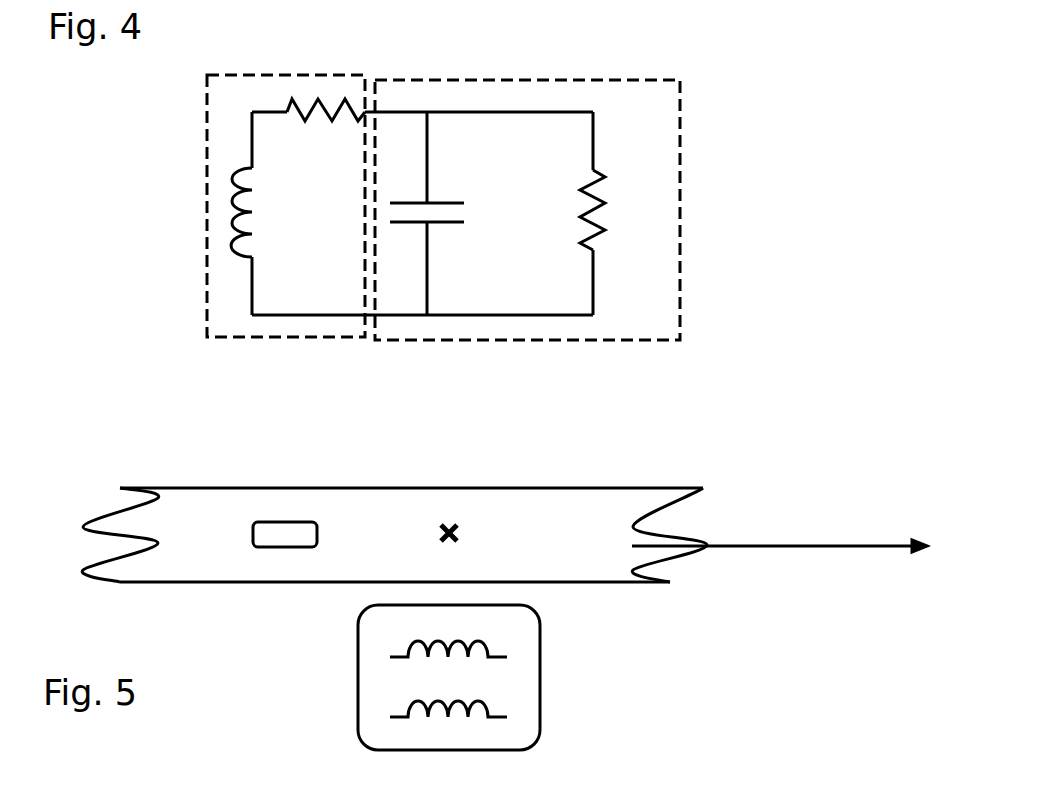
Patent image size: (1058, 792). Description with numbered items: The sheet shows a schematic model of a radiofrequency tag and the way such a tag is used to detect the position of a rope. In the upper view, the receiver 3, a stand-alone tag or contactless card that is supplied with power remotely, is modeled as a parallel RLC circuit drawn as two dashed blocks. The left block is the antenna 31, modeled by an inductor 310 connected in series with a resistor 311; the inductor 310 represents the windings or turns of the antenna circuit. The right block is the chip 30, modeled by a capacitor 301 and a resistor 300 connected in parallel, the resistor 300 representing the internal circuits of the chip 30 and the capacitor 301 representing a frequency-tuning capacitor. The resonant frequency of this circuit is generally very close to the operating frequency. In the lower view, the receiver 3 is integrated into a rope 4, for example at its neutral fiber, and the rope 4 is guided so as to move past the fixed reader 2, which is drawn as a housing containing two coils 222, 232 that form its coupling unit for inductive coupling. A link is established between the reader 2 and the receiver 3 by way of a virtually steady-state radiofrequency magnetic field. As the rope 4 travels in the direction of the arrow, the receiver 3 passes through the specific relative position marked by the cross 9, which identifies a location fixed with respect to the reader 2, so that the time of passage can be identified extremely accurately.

In FIG. 4, the receiver 3 is at (443, 177).
In FIG. 5, the receiver 3 is at (283, 522).
In FIG. 4, the chip 30 is at (682, 212).
In FIG. 4, the antenna 31 is at (207, 207).
In FIG. 4, the resistor 300 is at (605, 205).
In FIG. 4, the capacitor 301 is at (464, 202).
In FIG. 4, the inductor 310 is at (232, 207).
In FIG. 4, the resistor 311 is at (327, 100).
In FIG. 5, the rope 4 is at (405, 503).
In FIG. 5, the cross 9 is at (455, 525).
In FIG. 5, the reader 2 is at (472, 677).
In FIG. 5, the first coil 222 is at (408, 645).
In FIG. 5, the second coil 232 is at (408, 705).